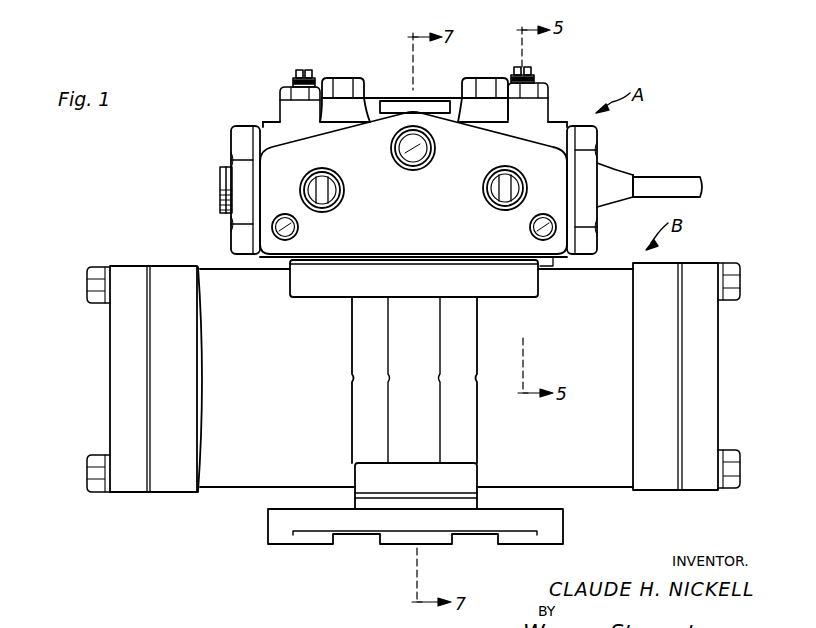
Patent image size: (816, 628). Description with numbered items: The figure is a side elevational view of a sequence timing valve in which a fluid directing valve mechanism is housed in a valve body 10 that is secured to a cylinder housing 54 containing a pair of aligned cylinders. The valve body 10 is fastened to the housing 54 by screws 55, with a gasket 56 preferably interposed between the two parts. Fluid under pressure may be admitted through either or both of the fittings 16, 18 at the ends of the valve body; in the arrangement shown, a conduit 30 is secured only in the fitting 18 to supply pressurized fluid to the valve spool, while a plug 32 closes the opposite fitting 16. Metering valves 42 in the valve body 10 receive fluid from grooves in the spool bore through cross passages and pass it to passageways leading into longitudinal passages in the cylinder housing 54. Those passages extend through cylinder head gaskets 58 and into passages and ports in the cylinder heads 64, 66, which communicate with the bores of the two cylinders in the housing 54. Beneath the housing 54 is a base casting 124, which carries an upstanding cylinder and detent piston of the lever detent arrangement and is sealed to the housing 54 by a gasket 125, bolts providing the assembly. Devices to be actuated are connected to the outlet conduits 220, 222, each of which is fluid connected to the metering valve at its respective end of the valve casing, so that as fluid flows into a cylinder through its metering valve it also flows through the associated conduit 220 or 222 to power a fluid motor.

The valve body 10 is at (258, 109).
The fitting 16 is at (231, 133).
The fitting 18 is at (597, 138).
The conduit 30 is at (650, 177).
The plug 32 is at (221, 179).
The metering valves 42 is at (296, 73).
The cylinder housing 54 is at (214, 265).
The screws 55 is at (345, 84).
The gasket 56 is at (545, 262).
The cylinder head gaskets 58 is at (148, 266).
The cylinder head 64 is at (110, 366).
The cylinder head 66 is at (718, 401).
The base casting 124 is at (565, 528).
The gasket 125 is at (355, 497).
The conduit 220 is at (337, 205).
The conduit 222 is at (488, 196).